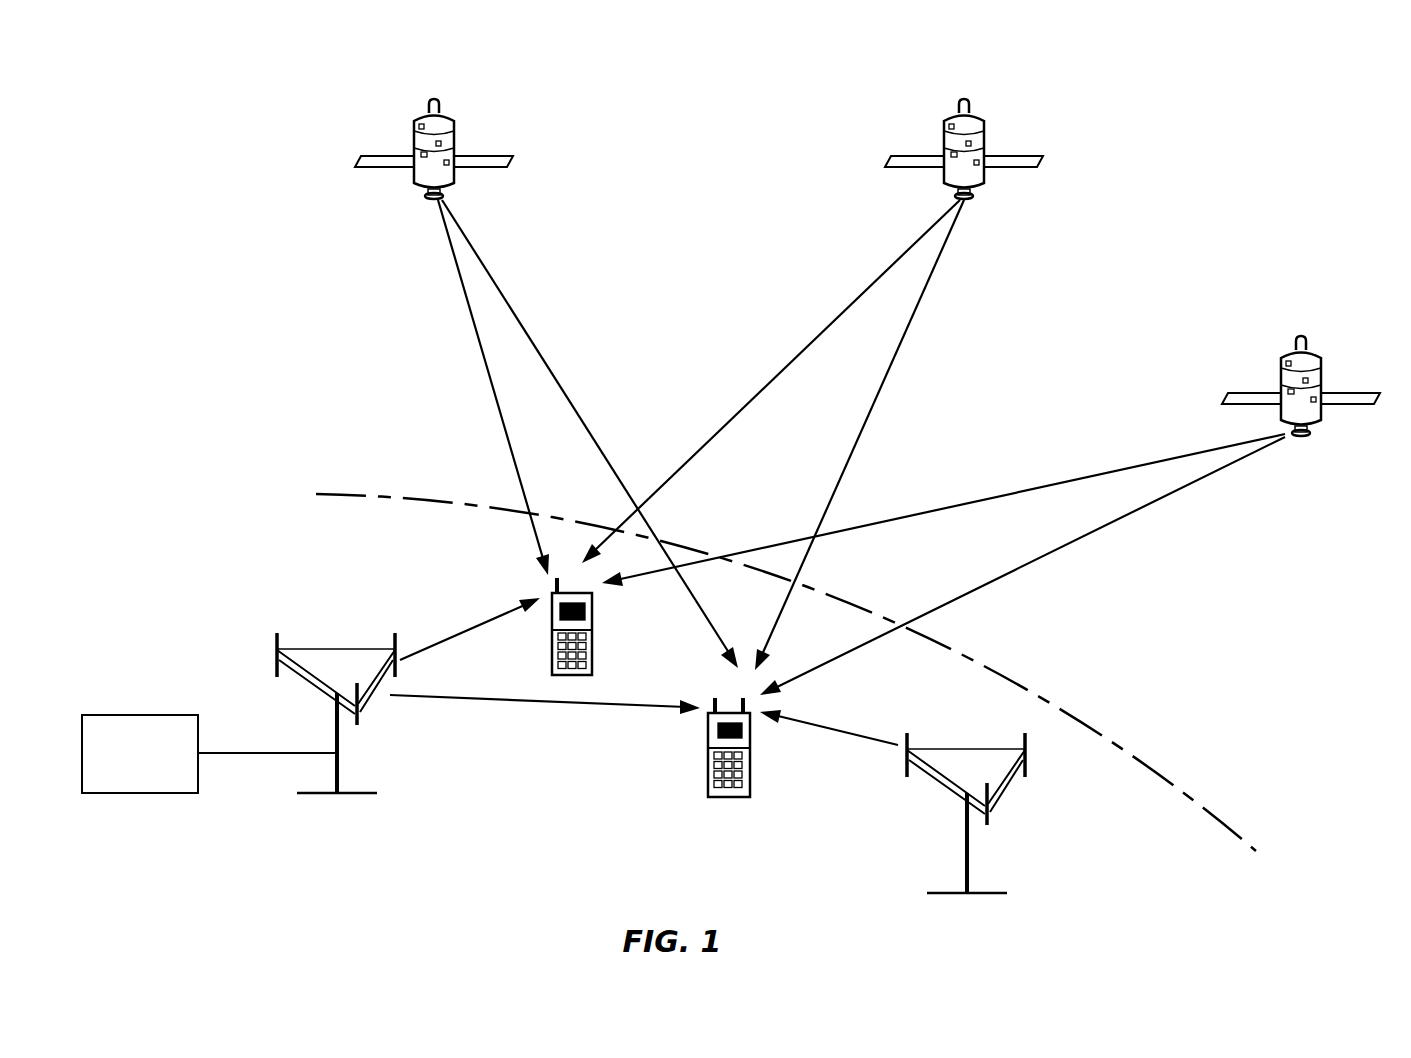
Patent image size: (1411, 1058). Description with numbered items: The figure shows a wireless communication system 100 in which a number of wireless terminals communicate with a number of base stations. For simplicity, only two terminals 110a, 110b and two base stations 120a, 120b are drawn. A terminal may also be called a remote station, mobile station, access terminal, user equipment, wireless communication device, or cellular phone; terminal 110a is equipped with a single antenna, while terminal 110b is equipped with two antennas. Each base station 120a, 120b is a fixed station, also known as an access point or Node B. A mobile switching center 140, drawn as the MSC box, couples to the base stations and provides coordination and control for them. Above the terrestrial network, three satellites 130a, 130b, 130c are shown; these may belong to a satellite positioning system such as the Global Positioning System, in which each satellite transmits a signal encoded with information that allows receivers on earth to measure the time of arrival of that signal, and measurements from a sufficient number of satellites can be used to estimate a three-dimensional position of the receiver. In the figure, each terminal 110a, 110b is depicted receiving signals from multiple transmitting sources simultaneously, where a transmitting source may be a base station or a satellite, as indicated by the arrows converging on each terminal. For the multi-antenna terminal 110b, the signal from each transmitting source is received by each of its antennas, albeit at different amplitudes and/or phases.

The wireless communication system 100 is at (225, 509).
The terminal 110a is at (593, 654).
The terminal 110b is at (708, 770).
The base station 120a is at (329, 649).
The base station 120b is at (959, 817).
The satellite 130a is at (486, 157).
The satellite 130b is at (974, 132).
The satellite 130c is at (1310, 369).
The mobile switching center (MSC) 140 is at (137, 715).